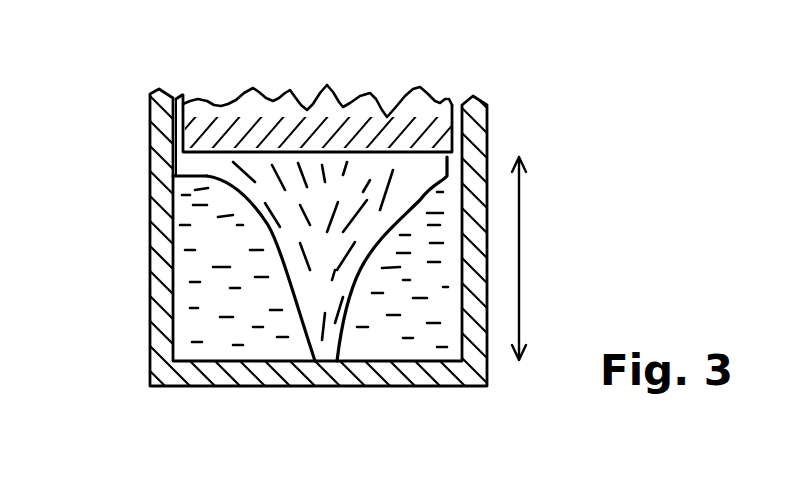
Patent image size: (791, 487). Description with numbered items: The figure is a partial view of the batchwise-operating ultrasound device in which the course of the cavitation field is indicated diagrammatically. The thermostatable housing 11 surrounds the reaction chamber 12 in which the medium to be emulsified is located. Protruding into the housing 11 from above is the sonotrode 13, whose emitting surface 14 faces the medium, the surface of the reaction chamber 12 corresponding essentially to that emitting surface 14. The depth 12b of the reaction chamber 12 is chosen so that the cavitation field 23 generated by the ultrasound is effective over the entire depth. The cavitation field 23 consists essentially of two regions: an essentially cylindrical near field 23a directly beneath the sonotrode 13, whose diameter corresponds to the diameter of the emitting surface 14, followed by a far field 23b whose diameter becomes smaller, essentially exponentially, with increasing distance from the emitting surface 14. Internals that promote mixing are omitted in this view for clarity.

The housing 11 is at (184, 371).
The reaction chamber 12 is at (407, 308).
The depth of the reaction chamber 12b is at (519, 265).
The sonotrode 13 is at (272, 127).
The emitting surface 14 is at (358, 149).
The cavitation field 23 is at (282, 231).
The near field 23a is at (217, 167).
The far field 23b is at (318, 287).